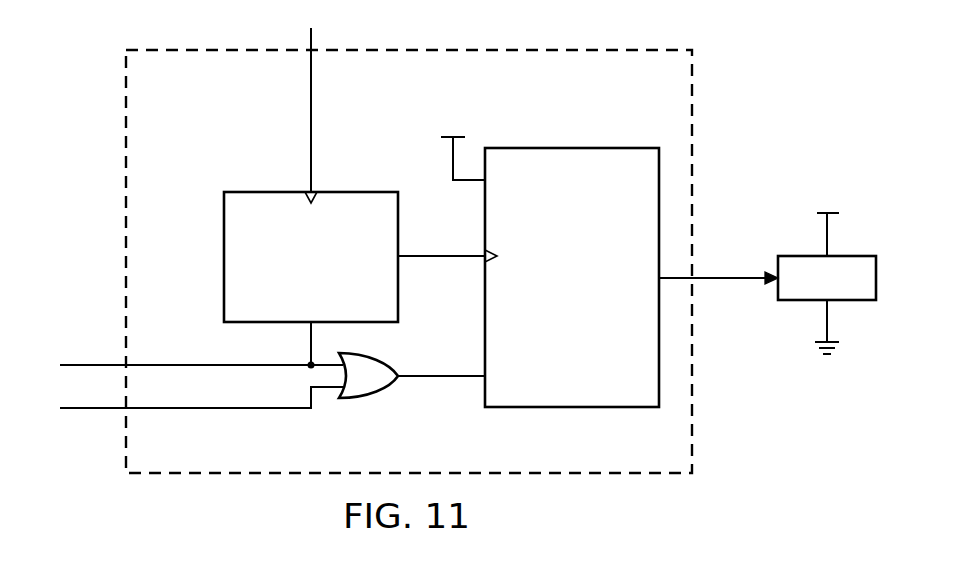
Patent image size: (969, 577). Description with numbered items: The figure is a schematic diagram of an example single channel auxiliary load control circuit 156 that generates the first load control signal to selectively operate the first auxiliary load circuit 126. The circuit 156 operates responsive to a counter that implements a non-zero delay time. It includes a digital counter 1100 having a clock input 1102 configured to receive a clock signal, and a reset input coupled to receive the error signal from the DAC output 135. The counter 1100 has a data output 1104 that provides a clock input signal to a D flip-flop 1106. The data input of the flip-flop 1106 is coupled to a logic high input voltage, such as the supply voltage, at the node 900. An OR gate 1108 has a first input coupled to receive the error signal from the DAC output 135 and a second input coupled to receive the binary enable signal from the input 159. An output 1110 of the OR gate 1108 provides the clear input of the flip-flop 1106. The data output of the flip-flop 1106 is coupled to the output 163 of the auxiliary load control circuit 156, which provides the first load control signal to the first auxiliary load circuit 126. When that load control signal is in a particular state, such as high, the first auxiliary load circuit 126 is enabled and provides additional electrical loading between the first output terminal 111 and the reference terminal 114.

The auxiliary load control circuit 156 is at (126, 133).
The clock input 1102 is at (310, 122).
The digital counter 1100 is at (224, 243).
The data output 1104 is at (430, 253).
The node 900 is at (451, 158).
The D flip-flop 1106 is at (577, 409).
The DAC output 135 is at (93, 363).
The input 159 is at (93, 410).
The OR gate 1108 is at (376, 398).
The output of the OR gate 1110 is at (430, 372).
The output of the auxiliary load control circuit 163 is at (728, 281).
The first auxiliary load circuit 126 is at (802, 301).
The first output terminal 111 is at (827, 233).
The reference terminal 114 is at (827, 324).